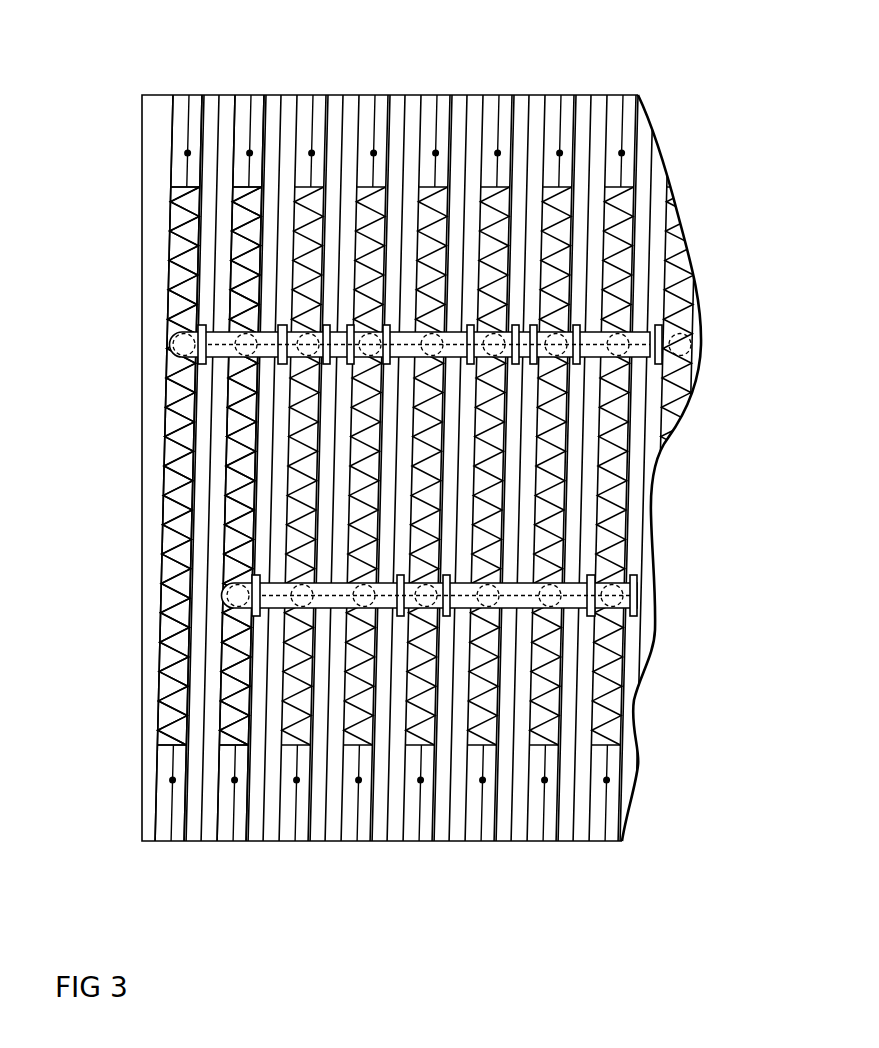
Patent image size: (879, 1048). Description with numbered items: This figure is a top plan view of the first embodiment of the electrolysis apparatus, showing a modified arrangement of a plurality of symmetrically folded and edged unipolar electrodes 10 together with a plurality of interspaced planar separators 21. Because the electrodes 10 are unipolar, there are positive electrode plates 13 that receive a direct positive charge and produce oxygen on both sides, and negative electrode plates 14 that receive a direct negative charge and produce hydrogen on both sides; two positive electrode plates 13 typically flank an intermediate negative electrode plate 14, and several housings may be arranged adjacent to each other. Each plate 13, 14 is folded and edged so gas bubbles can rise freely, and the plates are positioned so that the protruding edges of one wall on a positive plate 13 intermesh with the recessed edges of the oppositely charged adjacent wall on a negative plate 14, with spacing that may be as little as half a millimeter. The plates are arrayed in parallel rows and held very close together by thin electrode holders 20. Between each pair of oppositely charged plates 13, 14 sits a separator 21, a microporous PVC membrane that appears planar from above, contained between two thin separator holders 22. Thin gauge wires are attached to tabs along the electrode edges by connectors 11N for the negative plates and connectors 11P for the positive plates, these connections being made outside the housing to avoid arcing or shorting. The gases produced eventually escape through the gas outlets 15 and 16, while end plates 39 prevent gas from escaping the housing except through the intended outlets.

The unipolar electrode 10 is at (186, 214).
The positive connector 11P is at (185, 152).
The negative connector 11N is at (247, 152).
The positive electrode plate 13 is at (188, 465).
The negative electrode plate 14 is at (226, 508).
The gas outlet 15 is at (186, 336).
The gas outlet 16 is at (226, 592).
The electrode holder 20 is at (180, 832).
The separator 21 is at (213, 266).
The separator holder 22 is at (231, 99).
The end plate 39 is at (532, 110).